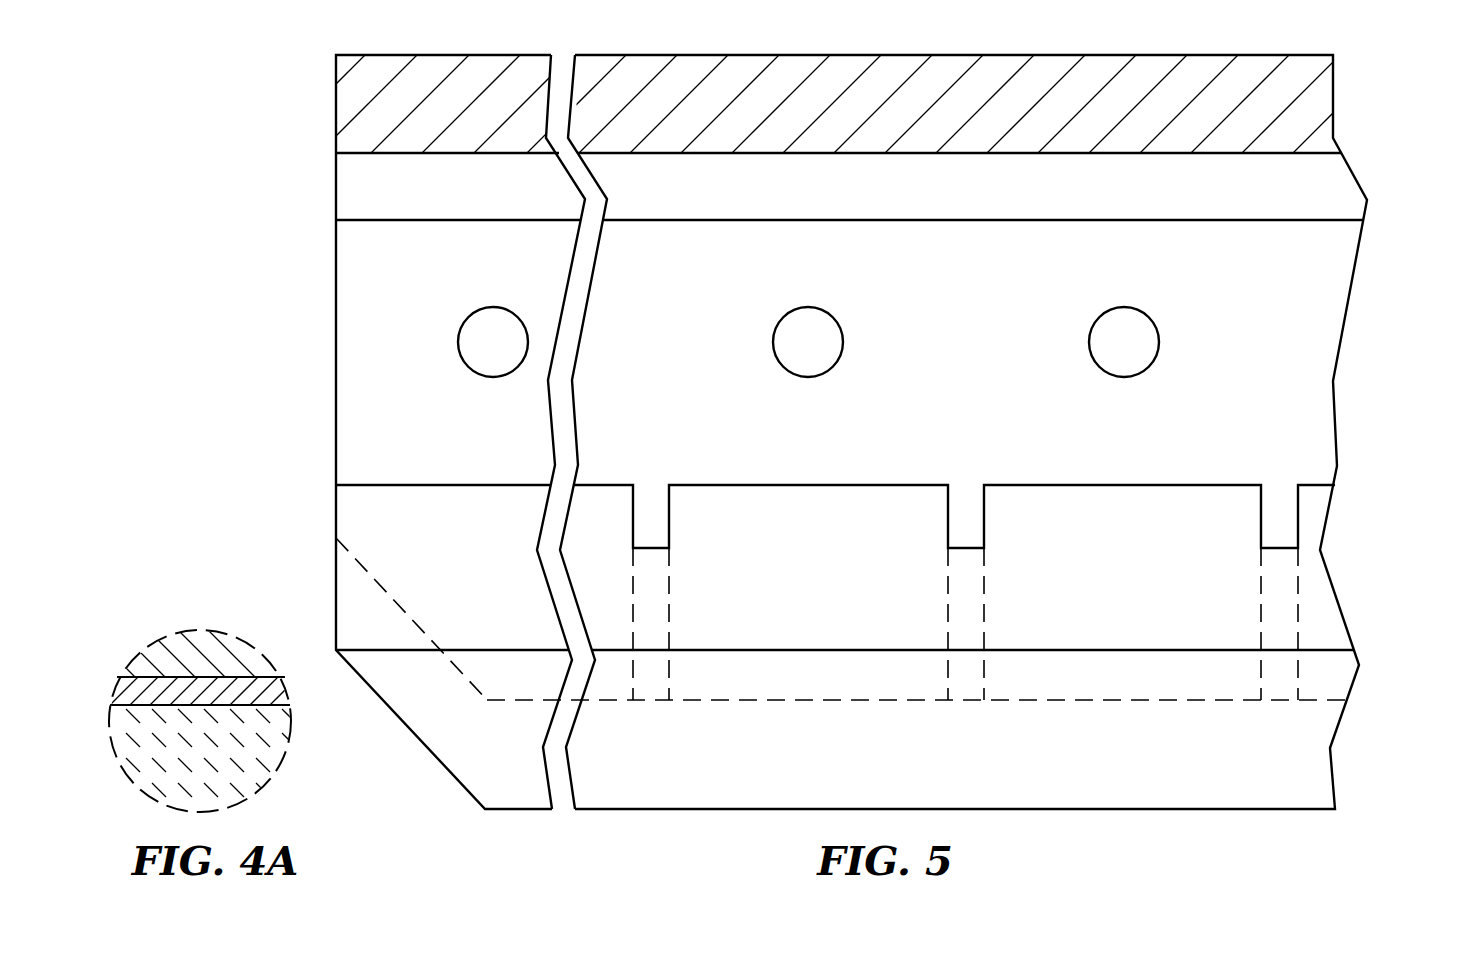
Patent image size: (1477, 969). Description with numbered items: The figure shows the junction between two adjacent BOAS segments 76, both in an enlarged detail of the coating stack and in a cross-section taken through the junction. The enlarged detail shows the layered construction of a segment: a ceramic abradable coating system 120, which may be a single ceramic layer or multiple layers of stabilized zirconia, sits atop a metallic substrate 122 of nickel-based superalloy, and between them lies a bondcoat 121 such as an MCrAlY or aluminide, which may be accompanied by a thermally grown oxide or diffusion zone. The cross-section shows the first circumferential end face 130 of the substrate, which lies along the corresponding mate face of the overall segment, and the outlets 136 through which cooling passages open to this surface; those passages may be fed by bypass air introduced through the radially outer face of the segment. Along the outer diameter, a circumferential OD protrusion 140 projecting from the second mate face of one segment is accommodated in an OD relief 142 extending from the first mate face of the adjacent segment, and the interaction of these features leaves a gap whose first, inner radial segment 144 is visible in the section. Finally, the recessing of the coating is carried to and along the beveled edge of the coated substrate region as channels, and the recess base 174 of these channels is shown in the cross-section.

In FIG. 5, the BOAS segment 76 is at (258, 183).
In FIG. 4A, the ceramic abradable coating system 120 is at (267, 755).
In FIG. 4A, the bondcoat 121 is at (153, 687).
In FIG. 4A, the metallic substrate 122 is at (193, 647).
In FIG. 5, the first circumferential end face 130 is at (1223, 325).
In FIG. 5, the outlets 136 is at (825, 338).
In FIG. 5, the circumferential OD protrusion 140 is at (1282, 103).
In FIG. 5, the OD relief 142 is at (1322, 181).
In FIG. 5, the first radial segment of gap 144 is at (1342, 272).
In FIG. 5, the recess base 174 is at (780, 485).